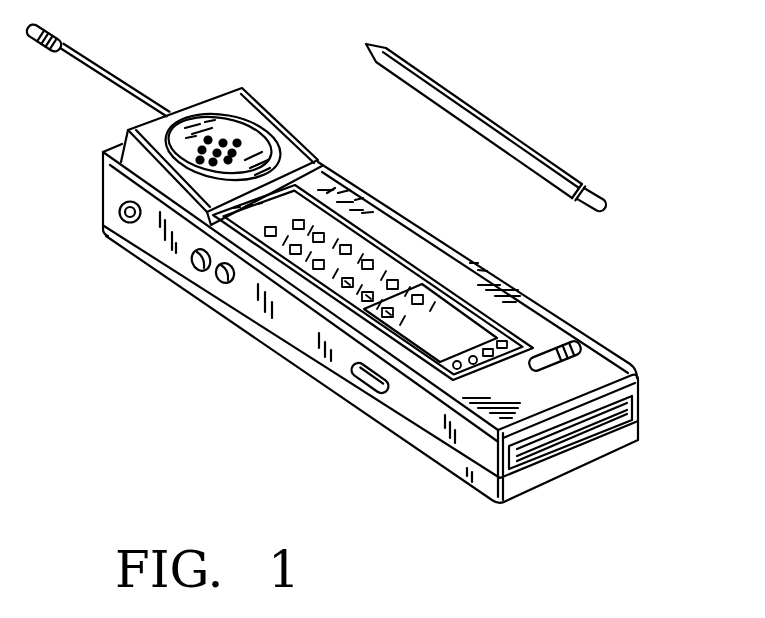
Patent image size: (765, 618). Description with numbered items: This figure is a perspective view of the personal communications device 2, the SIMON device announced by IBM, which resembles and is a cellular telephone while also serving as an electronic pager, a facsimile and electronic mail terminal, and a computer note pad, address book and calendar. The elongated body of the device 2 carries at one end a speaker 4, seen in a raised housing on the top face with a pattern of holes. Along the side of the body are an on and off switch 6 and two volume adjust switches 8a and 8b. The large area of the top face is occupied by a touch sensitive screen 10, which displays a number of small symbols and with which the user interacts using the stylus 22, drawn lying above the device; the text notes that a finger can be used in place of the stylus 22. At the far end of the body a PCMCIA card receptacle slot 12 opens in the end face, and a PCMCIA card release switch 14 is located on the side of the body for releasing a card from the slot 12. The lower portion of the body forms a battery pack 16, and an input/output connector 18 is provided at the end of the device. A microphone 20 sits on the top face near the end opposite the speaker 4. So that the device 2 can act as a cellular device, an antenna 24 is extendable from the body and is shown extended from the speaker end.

The personal communications device 2 is at (616, 238).
The speaker 4 is at (240, 132).
The on and off switch 6 is at (123, 220).
The volume adjust switch 8a is at (188, 265).
The volume adjust switch 8b is at (220, 283).
The touch sensitive screen 10 is at (307, 267).
The PCMCIA card receptacle slot 12 is at (550, 442).
The PCMCIA card release switch 14 is at (364, 387).
The battery pack 16 is at (423, 443).
The input/output connector 18 is at (600, 437).
The microphone 20 is at (565, 340).
The stylus 22 is at (487, 115).
The antenna 24 is at (118, 78).